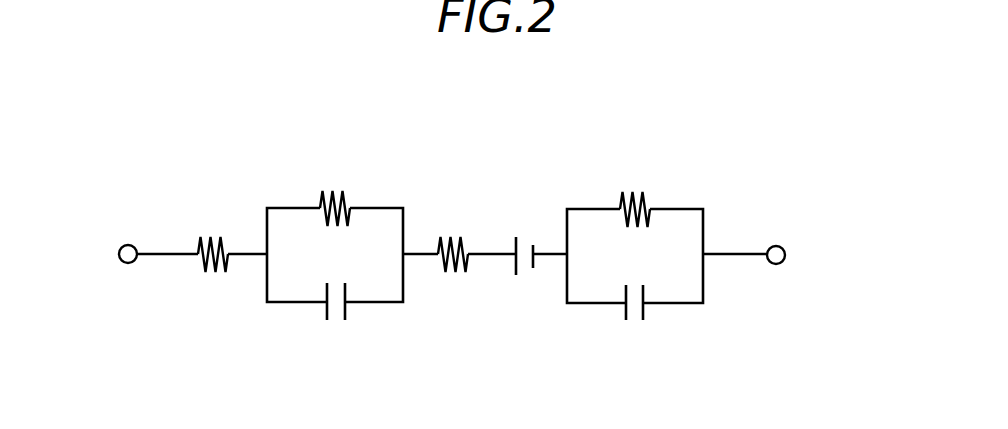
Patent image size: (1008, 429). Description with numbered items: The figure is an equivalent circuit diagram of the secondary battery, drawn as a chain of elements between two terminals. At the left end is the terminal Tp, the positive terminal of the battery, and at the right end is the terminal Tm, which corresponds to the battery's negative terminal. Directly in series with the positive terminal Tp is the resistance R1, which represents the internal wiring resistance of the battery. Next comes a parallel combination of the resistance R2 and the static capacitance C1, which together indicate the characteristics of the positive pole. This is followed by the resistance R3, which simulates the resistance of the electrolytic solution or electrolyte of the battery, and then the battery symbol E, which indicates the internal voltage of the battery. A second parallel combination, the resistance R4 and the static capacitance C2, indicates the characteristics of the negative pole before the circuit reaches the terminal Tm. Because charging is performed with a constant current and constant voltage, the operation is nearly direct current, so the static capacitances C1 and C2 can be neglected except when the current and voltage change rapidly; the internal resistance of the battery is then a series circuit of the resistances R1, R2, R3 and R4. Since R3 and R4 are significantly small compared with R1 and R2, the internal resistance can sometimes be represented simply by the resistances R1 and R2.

The positive terminal Tp is at (128, 244).
The negative terminal Tm is at (777, 245).
The internal wiring resistance R1 is at (212, 275).
The positive pole resistance R2 is at (335, 190).
The electrolyte resistance R3 is at (452, 275).
The negative pole resistance R4 is at (635, 192).
The positive pole static capacitance C1 is at (333, 321).
The negative pole static capacitance C2 is at (632, 321).
The internal voltage E is at (523, 240).